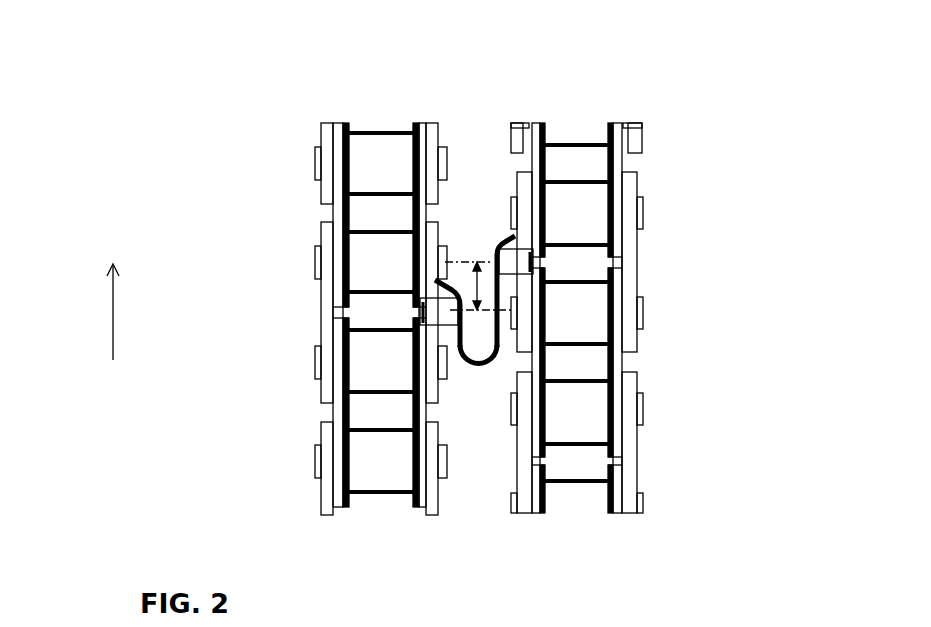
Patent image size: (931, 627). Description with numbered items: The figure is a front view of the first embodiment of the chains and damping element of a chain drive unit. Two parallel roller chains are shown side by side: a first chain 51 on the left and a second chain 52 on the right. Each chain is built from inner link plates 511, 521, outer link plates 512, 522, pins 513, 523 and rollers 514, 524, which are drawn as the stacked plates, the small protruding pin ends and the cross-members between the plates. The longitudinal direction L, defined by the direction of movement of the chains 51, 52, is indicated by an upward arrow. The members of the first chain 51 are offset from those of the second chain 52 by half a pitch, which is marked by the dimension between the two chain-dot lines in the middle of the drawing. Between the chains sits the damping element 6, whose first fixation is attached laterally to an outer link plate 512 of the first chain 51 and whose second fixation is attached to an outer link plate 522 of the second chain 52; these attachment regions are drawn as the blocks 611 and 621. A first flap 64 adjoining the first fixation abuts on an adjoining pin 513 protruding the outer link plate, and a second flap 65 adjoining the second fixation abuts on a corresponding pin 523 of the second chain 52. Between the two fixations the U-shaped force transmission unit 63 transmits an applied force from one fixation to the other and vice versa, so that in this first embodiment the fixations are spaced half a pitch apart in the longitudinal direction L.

The first chain 51 is at (372, 93).
The second chain 52 is at (578, 90).
The inner link plates 511 is at (420, 212).
The outer link plates 512 is at (435, 347).
The pins 513 is at (315, 455).
The rollers 514 is at (372, 468).
The inner link plates 521 is at (537, 172).
The outer link plates 522 is at (523, 332).
The pins 523 is at (640, 407).
The rollers 524 is at (587, 422).
The damping element 6 is at (478, 473).
The first connecting block 611 is at (437, 312).
The second connecting block 621 is at (520, 262).
The force transmission unit 63 is at (475, 368).
The first flap 64 is at (443, 283).
The second flap 65 is at (498, 243).
The longitudinal direction L is at (107, 315).